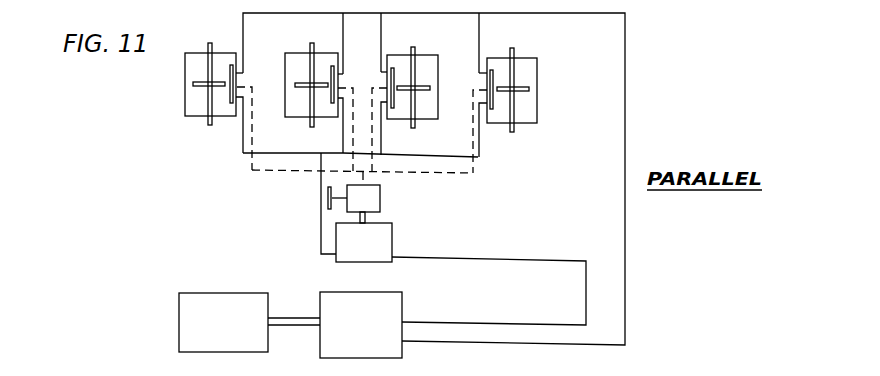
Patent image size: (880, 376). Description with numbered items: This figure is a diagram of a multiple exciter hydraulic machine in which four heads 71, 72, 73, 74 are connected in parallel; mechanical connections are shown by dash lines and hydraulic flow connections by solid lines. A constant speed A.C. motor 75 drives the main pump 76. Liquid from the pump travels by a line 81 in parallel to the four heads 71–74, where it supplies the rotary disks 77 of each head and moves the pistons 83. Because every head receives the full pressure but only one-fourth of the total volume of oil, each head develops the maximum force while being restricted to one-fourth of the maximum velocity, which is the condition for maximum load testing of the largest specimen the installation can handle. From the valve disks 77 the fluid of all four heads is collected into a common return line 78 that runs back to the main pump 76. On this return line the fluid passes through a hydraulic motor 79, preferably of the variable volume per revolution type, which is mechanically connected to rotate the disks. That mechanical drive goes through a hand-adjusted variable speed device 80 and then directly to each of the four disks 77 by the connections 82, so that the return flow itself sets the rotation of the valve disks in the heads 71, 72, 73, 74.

The head 71 is at (187, 53).
The head 72 is at (321, 53).
The head 73 is at (425, 55).
The head 74 is at (527, 58).
The constant speed A.C. motor 75 is at (235, 303).
The main pump 76 is at (337, 303).
The rotary disk 77 is at (234, 78).
The common return line 78 is at (312, 157).
The hydraulic motor 79 is at (381, 247).
The hand-adjusted variable speed device 80 is at (380, 197).
The line 81 is at (623, 187).
The connections 82 is at (277, 171).
The piston 83 is at (196, 87).